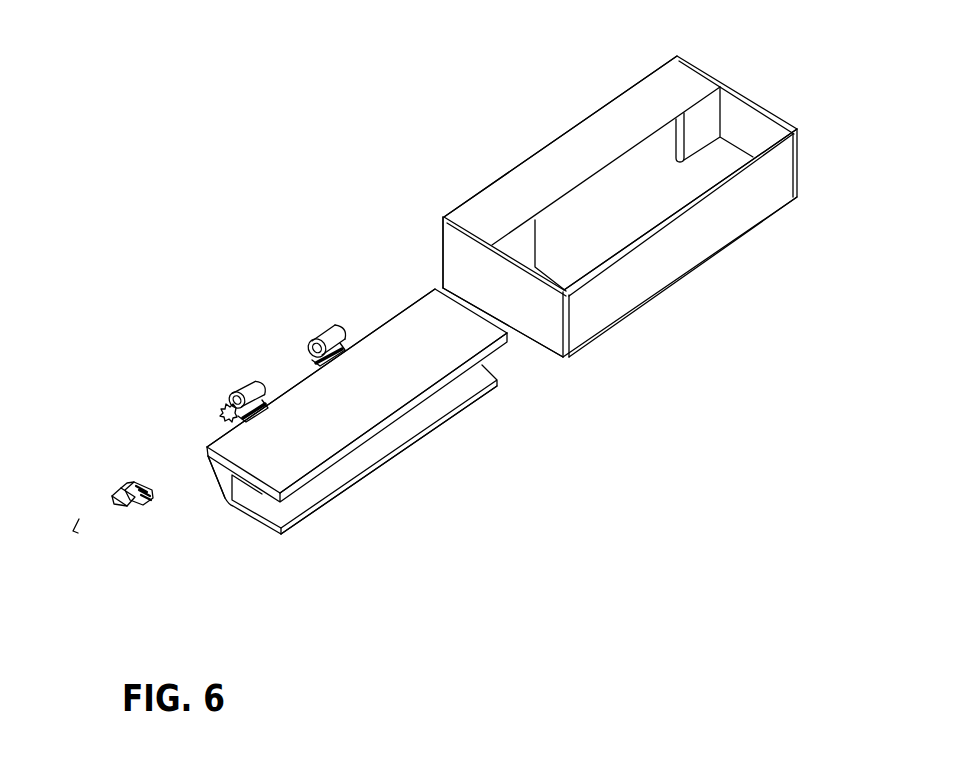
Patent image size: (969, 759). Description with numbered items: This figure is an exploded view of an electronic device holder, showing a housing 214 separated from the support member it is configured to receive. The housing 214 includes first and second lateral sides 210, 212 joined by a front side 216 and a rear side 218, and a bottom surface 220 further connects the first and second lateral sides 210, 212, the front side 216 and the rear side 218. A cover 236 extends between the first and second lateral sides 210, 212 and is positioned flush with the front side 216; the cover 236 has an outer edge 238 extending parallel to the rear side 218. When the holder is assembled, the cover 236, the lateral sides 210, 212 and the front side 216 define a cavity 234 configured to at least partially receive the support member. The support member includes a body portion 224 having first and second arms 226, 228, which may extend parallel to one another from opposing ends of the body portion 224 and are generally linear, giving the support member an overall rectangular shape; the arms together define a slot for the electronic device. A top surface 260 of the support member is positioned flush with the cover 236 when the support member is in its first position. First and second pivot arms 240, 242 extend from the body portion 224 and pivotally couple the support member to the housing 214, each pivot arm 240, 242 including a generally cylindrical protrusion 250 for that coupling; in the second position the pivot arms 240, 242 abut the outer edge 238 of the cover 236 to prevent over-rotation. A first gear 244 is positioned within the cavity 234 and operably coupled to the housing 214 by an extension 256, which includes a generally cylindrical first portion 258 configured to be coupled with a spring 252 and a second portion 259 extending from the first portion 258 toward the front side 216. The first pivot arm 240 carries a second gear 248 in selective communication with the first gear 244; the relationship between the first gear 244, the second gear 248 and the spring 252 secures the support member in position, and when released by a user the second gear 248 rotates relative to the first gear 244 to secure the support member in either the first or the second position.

The first lateral side 210 is at (462, 236).
The second lateral side 212 is at (770, 112).
The housing 214 is at (718, 217).
The front side 216 is at (507, 173).
The rear side 218 is at (625, 253).
The bottom surface 220 is at (557, 267).
The body portion 224 is at (225, 487).
The first arm 226 is at (407, 412).
The second arm 228 is at (383, 460).
The cavity 234 is at (647, 157).
The cover 236 is at (667, 90).
The outer edge 238 is at (610, 160).
The first pivot arm 240 is at (250, 392).
The second pivot arm 242 is at (306, 343).
The first gear 244 is at (153, 496).
The second gear 248 is at (224, 416).
The cylindrical protrusion 250 is at (340, 338).
The spring 252 is at (76, 531).
The extension 256 is at (117, 496).
The first portion 258 is at (127, 506).
The second portion 259 is at (113, 502).
The top surface 260 is at (432, 350).